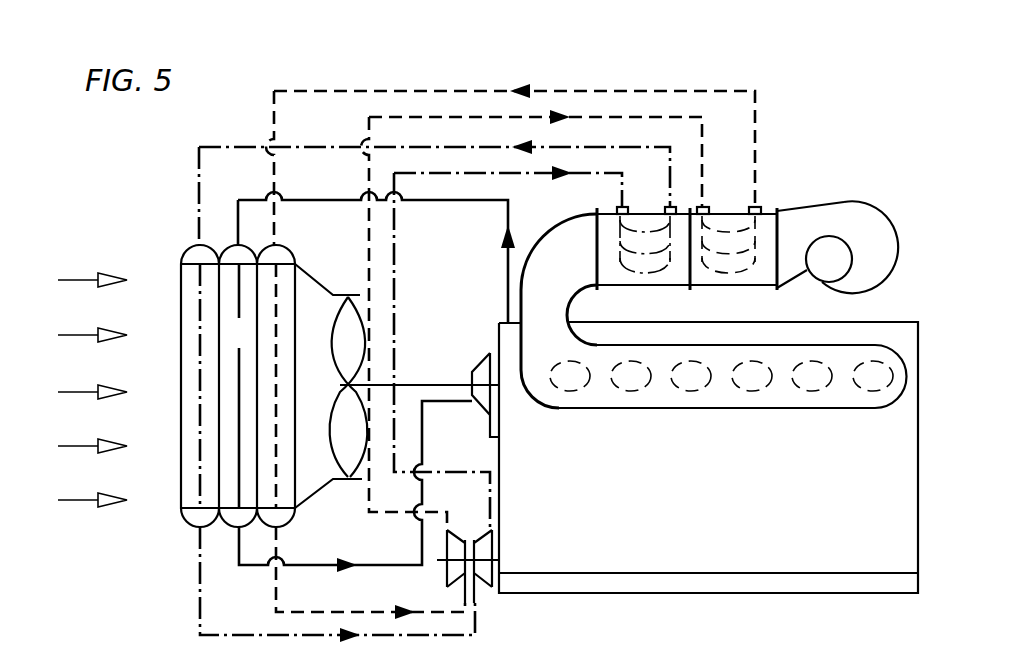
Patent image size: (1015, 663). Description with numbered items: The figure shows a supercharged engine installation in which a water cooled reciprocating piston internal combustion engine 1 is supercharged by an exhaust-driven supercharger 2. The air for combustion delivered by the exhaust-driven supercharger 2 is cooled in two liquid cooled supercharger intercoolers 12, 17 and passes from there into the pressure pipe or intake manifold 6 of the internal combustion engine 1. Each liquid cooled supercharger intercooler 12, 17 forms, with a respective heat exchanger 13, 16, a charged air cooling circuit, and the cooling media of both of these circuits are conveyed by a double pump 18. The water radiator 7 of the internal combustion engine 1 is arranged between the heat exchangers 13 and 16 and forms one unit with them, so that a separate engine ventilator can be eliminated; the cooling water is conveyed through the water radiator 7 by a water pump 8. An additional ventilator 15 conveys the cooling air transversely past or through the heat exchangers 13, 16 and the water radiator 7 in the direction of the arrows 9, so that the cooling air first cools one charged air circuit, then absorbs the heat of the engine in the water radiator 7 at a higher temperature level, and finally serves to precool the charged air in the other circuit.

The internal combustion engine 1 is at (888, 483).
The exhaust-driven supercharger 2 is at (858, 212).
The intake manifold 6 is at (855, 353).
The water radiator 7 is at (238, 386).
The water pump 8 is at (482, 373).
The arrows 9 is at (112, 272).
The liquid cooled supercharger intercooler 12 is at (758, 222).
The heat exchanger 13 is at (280, 275).
The additional ventilator 15 is at (353, 465).
The heat exchanger 16 is at (190, 327).
The liquid cooled supercharger intercooler 17 is at (652, 223).
The double pump 18 is at (482, 540).